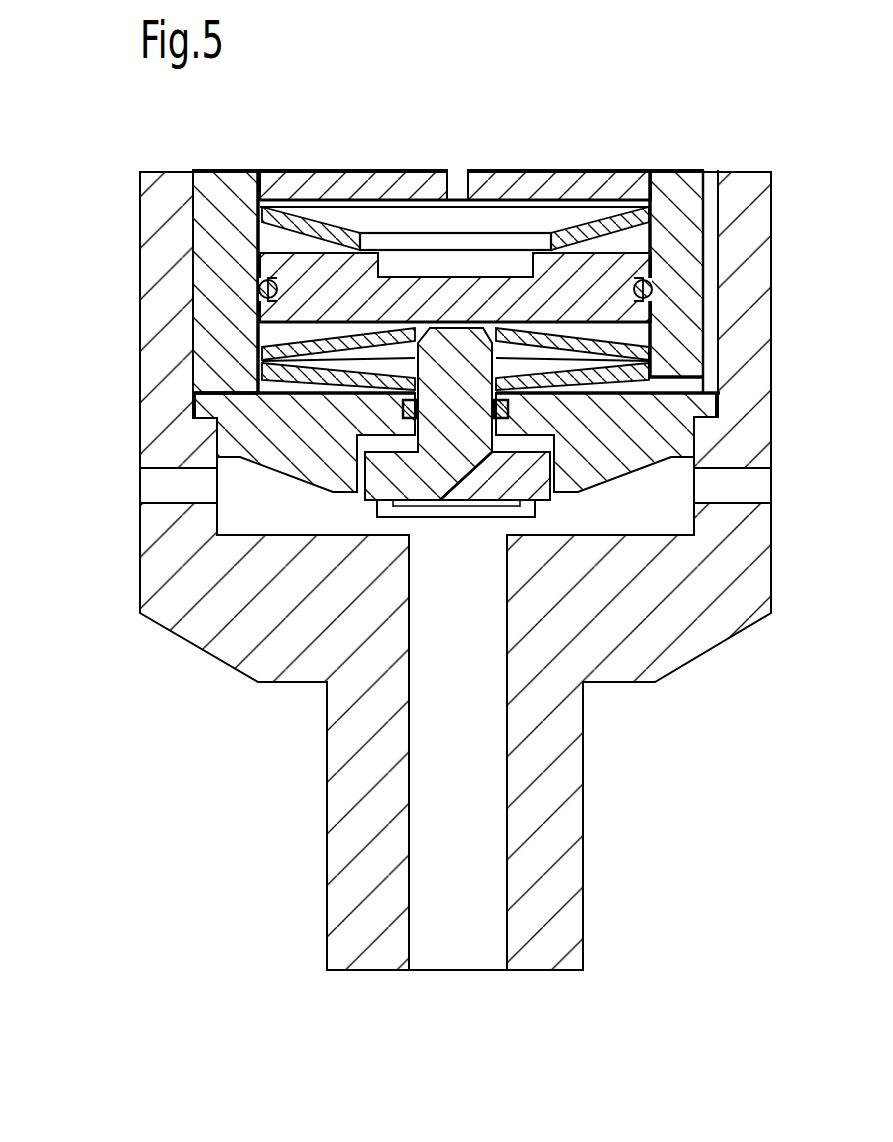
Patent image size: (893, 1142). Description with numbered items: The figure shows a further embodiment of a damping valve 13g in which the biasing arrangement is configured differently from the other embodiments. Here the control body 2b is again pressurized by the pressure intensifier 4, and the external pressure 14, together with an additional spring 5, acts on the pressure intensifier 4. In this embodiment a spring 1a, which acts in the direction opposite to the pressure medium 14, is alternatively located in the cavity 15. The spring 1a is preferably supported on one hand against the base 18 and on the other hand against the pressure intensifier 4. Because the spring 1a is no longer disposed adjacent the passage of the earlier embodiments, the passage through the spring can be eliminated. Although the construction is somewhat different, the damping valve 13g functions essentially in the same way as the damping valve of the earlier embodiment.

The external pressure 14 is at (455, 138).
The additional spring 5 is at (262, 212).
The cavity 15 is at (262, 300).
The damping valve 13g is at (126, 335).
The base 18 is at (238, 418).
The pressure intensifier 4 is at (625, 265).
The spring 1a is at (627, 331).
The control body 2b is at (506, 405).